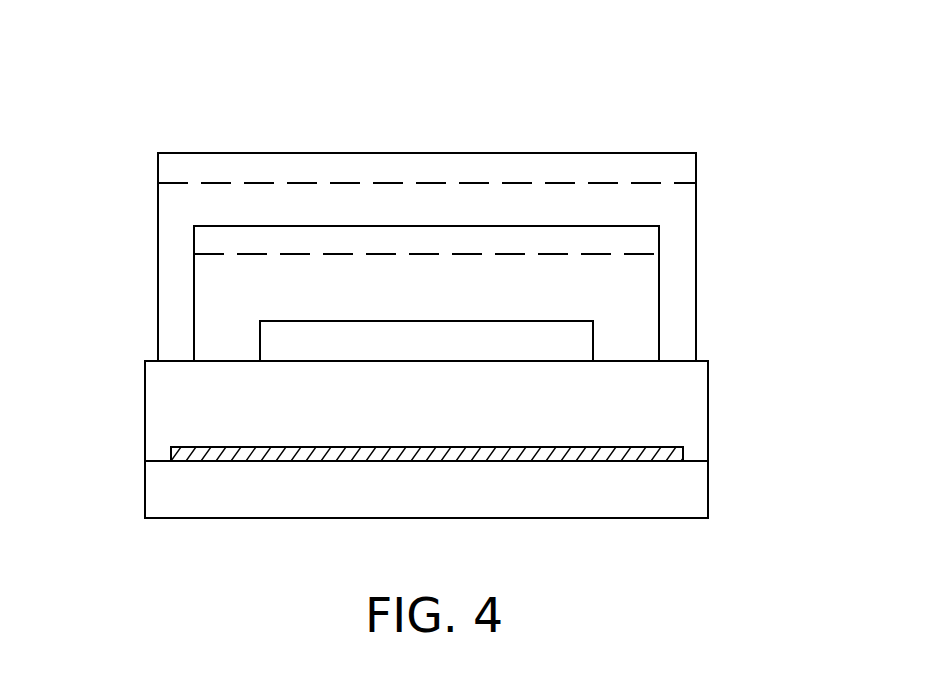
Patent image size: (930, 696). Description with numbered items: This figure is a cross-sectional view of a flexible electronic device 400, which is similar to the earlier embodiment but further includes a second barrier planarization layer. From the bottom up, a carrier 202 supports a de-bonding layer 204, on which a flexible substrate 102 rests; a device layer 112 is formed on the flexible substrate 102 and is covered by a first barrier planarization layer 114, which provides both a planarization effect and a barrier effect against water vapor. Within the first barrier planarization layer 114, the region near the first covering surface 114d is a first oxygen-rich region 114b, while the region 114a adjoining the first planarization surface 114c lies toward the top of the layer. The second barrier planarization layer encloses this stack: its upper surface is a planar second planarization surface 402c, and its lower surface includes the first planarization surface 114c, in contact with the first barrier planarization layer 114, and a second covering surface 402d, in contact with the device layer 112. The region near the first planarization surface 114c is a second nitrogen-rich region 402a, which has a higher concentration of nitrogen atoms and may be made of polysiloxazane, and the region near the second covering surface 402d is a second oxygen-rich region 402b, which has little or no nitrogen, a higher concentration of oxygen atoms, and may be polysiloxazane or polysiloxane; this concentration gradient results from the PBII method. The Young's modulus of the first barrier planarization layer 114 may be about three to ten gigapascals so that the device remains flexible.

The flexible electronic device 400 is at (130, 75).
The second nitrogen-rich region 402a is at (168, 165).
The second oxygen-rich region 402b is at (170, 204).
The second planarization surface 402c is at (189, 152).
The second covering surface 402d is at (234, 225).
The first barrier planarization layer 114 is at (760, 215).
The first protective sub-layer 114a is at (632, 242).
The first oxygen-rich region 114b is at (632, 286).
The first planarization surface 114c is at (614, 224).
The first covering surface 114d is at (560, 312).
The device layer 112 is at (583, 337).
The flexible substrate 102 is at (690, 408).
The de-bonding layer 204 is at (684, 450).
The carrier 202 is at (693, 485).